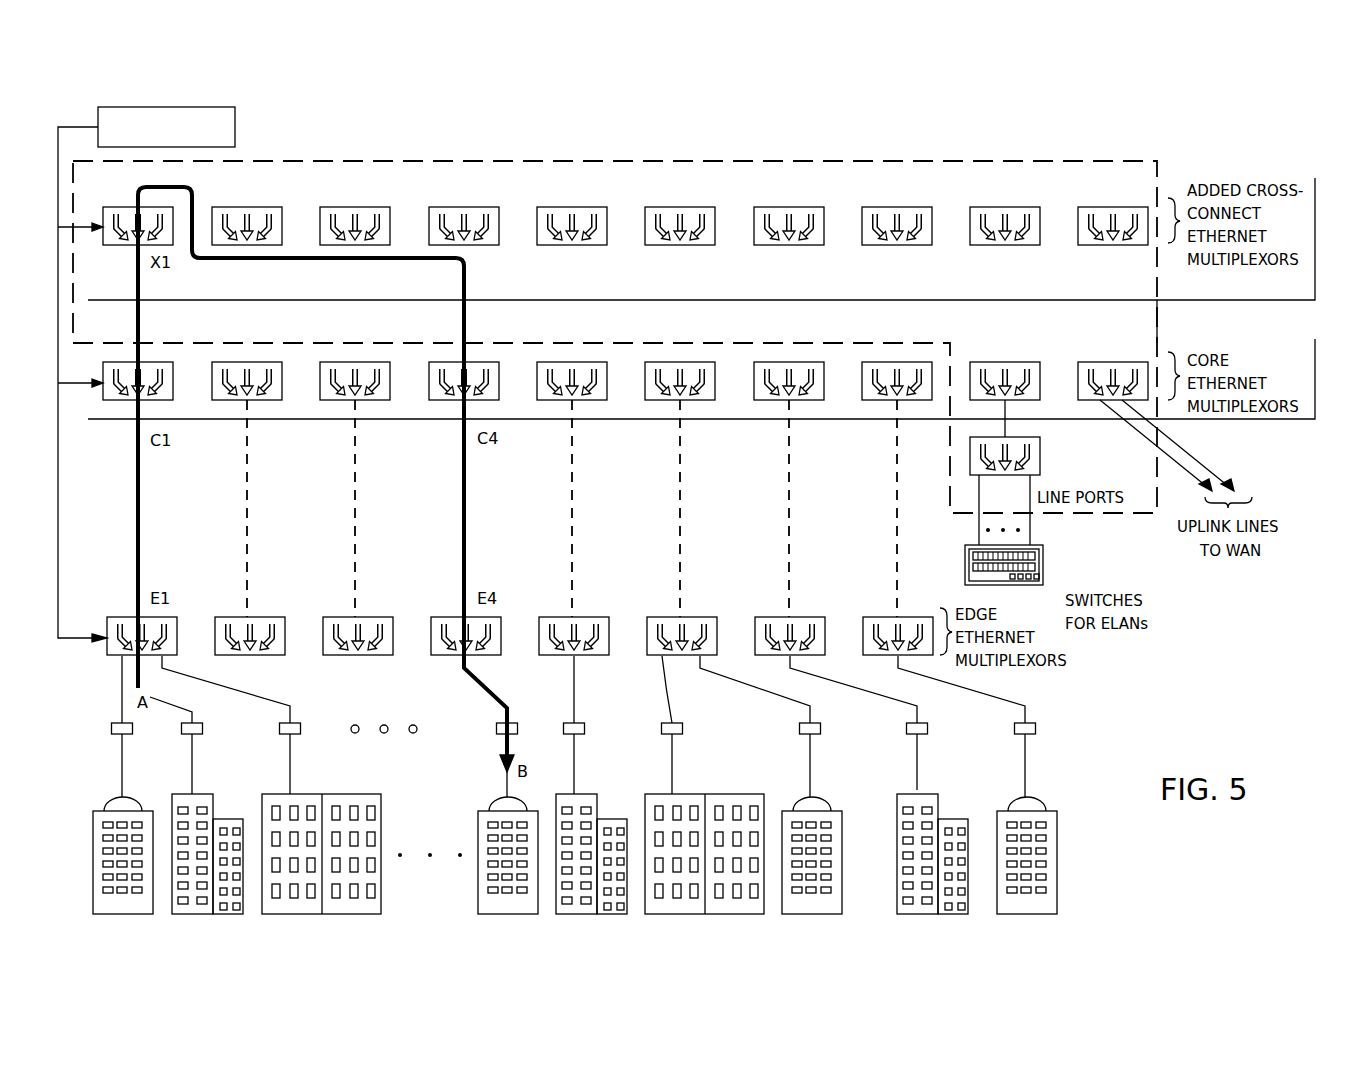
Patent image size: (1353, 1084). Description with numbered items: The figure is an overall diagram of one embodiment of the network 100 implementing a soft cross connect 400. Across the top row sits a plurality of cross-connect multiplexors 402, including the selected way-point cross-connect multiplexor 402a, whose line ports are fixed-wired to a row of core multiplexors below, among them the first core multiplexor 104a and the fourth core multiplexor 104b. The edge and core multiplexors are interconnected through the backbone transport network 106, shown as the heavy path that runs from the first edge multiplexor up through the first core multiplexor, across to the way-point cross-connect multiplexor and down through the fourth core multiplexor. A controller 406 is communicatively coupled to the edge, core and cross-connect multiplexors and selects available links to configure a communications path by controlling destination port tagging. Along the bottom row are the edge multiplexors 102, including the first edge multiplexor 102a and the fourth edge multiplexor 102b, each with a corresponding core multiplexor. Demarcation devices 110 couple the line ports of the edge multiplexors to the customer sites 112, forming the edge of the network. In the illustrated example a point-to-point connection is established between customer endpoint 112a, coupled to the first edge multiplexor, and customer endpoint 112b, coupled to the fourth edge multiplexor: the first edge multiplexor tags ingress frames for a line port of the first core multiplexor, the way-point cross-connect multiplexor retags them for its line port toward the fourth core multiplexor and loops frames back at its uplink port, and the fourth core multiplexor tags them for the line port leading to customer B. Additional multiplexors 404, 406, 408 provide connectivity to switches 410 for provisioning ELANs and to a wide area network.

The network 100 is at (1205, 148).
The soft cross-connect 400 is at (781, 158).
The cross-connect multiplexor 402 is at (1108, 247).
The cross-connect multiplexor X1 402a is at (115, 248).
The additional multiplexor 404 is at (1005, 358).
The controller 406 is at (235, 121).
The additional multiplexor 408 is at (1040, 458).
The switch 410 is at (1043, 563).
The core multiplexor C1 104a is at (125, 403).
The core multiplexor C4 104b is at (451, 403).
The backbone transport network 106 is at (132, 563).
The edge multiplexor 102 is at (882, 617).
The edge multiplexor E1 102a is at (113, 660).
The edge multiplexor E4 102b is at (453, 660).
The demarcation device 110 is at (115, 737).
The customer site 112 is at (1057, 855).
The customer endpoint A 112a is at (135, 794).
The customer endpoint B 112b is at (478, 880).